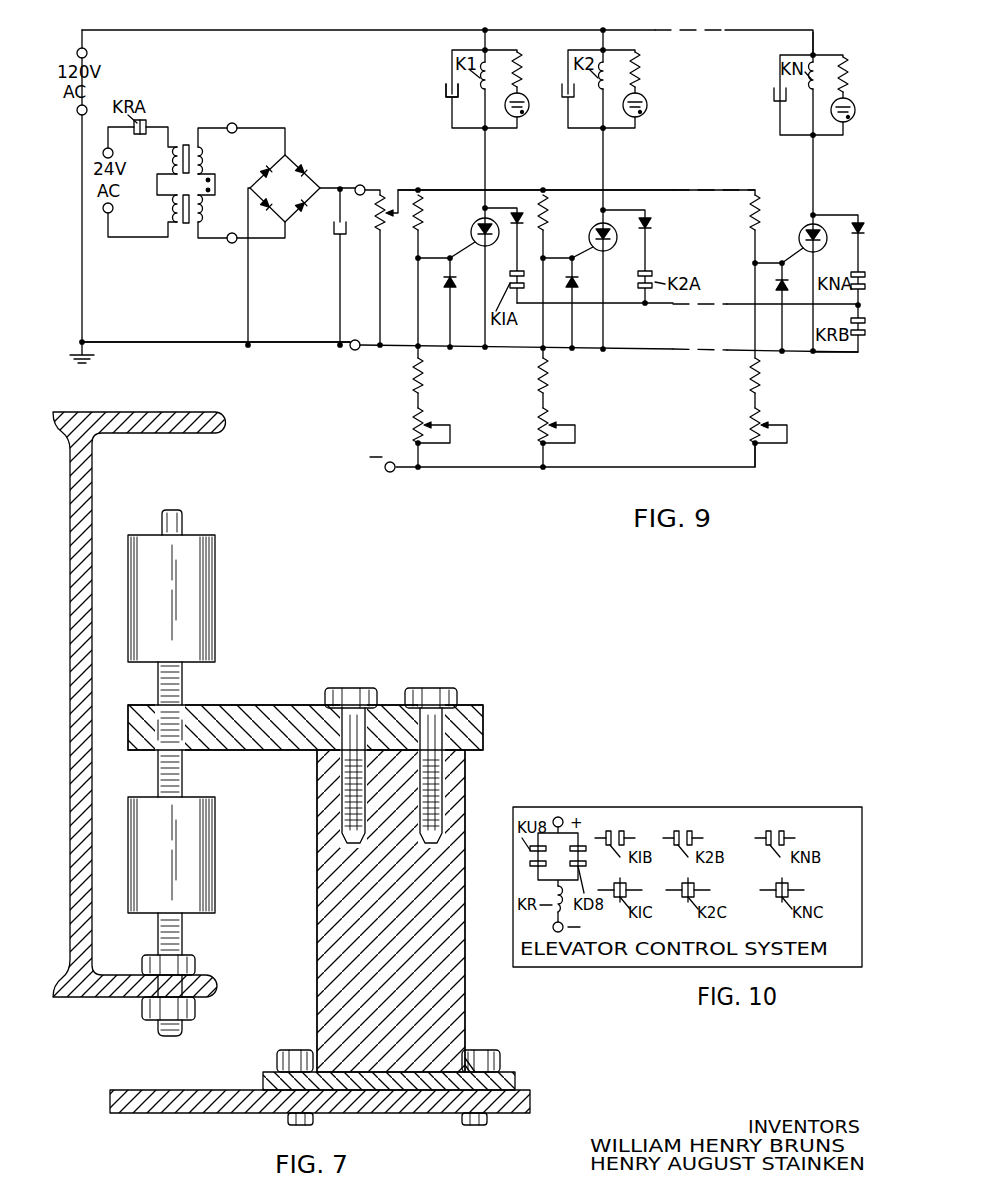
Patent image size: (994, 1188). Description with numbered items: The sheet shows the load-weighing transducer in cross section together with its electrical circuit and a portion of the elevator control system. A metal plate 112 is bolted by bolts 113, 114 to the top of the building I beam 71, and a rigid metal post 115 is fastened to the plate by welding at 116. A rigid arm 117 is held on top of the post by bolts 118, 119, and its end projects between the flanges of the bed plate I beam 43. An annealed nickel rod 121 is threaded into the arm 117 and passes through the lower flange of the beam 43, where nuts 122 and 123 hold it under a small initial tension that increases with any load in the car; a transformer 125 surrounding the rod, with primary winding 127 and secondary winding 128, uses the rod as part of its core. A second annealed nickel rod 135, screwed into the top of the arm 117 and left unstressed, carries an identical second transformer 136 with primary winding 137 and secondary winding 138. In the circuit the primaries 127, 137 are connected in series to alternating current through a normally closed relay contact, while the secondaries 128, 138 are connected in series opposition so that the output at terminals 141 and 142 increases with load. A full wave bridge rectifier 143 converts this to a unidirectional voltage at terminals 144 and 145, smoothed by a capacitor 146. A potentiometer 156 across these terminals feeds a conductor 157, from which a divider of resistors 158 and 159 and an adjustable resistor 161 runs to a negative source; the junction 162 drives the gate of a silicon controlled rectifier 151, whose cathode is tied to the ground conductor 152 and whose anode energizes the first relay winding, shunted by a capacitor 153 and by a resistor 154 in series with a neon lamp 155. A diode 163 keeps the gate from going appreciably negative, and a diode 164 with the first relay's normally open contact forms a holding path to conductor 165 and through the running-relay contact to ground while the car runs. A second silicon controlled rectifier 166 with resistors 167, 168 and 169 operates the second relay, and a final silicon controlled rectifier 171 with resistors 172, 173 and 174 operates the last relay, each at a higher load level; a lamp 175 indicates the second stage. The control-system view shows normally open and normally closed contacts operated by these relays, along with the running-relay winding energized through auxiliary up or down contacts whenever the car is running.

In FIG. 7, the bed plate I beam 43 is at (93, 450).
In FIG. 7, the building I beam 71 is at (193, 1112).
In FIG. 7, the metal plate 112 is at (262, 1081).
In FIG. 7, the bolt 113 is at (292, 1049).
In FIG. 7, the bolt 114 is at (500, 1067).
In FIG. 7, the rigid metal post 115 is at (466, 985).
In FIG. 7, the weld 116 is at (471, 1066).
In FIG. 7, the rigid arm 117 is at (221, 705).
In FIG. 7, the bolt 118 is at (334, 689).
In FIG. 7, the bolt 119 is at (420, 689).
In FIG. 9, the annealed nickel rod 121 is at (187, 224).
In FIG. 7, the annealed nickel rod 121 is at (184, 783).
In FIG. 7, the nut 122 is at (196, 961).
In FIG. 7, the nut 123 is at (196, 1010).
In FIG. 7, the transformer 125 is at (216, 862).
In FIG. 9, the primary winding 127 is at (170, 209).
In FIG. 9, the secondary winding 128 is at (207, 209).
In FIG. 9, the second annealed nickel rod 135 is at (187, 144).
In FIG. 7, the second annealed nickel rod 135 is at (181, 521).
In FIG. 7, the second transformer 136 is at (218, 578).
In FIG. 9, the primary winding 137 is at (170, 155).
In FIG. 9, the secondary winding 138 is at (207, 154).
In FIG. 9, the terminal 141 is at (236, 124).
In FIG. 9, the terminal 142 is at (230, 243).
In FIG. 9, the full wave bridge rectifier 143 is at (285, 188).
In FIG. 9, the terminal 144 is at (361, 185).
In FIG. 9, the terminal 145 is at (350, 348).
In FIG. 9, the capacitor 146 is at (338, 222).
In FIG. 9, the silicon controlled rectifier 151 is at (471, 232).
In FIG. 9, the ground conductor 152 is at (150, 344).
In FIG. 9, the capacitor 153 is at (451, 90).
In FIG. 9, the resistor 154 is at (518, 68).
In FIG. 9, the neon lamp 155 is at (521, 114).
In FIG. 9, the potentiometer 156 is at (376, 214).
In FIG. 9, the conductor 157 is at (524, 189).
In FIG. 9, the resistor 158 is at (424, 213).
In FIG. 9, the resistor 159 is at (412, 375).
In FIG. 9, the adjustable resistor 161 is at (412, 426).
In FIG. 9, the junction 162 is at (416, 259).
In FIG. 9, the diode 163 is at (451, 284).
In FIG. 9, the diode 164 is at (520, 213).
In FIG. 9, the conductor 165 is at (618, 305).
In FIG. 9, the second silicon controlled rectifier 166 is at (589, 236).
In FIG. 9, the resistor 167 is at (553, 205).
In FIG. 9, the resistor 168 is at (538, 375).
In FIG. 9, the resistor 169 is at (538, 427).
In FIG. 9, the silicon controlled rectifier 171 is at (799, 232).
In FIG. 9, the resistor 172 is at (749, 213).
In FIG. 9, the resistor 173 is at (749, 378).
In FIG. 9, the resistor 174 is at (749, 430).
In FIG. 9, the indicator lamp 175 is at (640, 114).